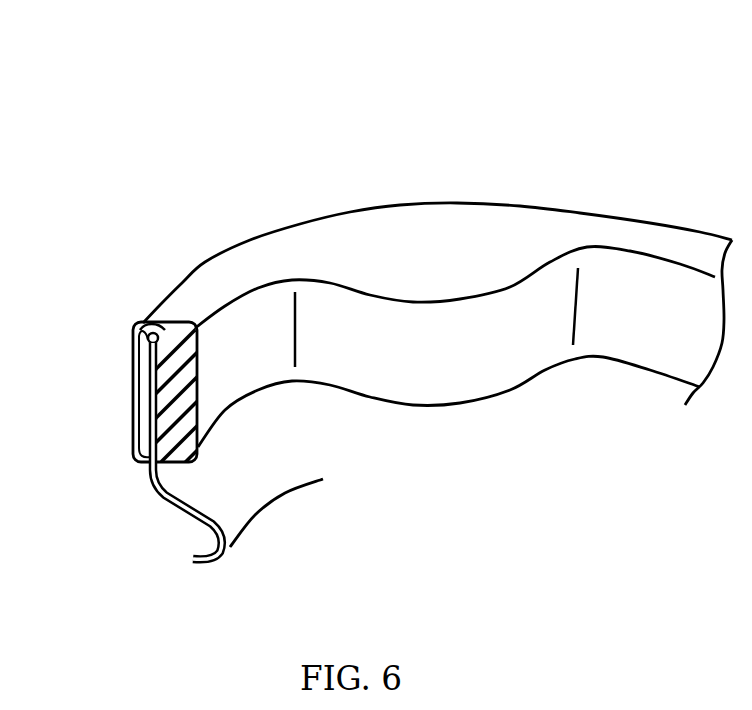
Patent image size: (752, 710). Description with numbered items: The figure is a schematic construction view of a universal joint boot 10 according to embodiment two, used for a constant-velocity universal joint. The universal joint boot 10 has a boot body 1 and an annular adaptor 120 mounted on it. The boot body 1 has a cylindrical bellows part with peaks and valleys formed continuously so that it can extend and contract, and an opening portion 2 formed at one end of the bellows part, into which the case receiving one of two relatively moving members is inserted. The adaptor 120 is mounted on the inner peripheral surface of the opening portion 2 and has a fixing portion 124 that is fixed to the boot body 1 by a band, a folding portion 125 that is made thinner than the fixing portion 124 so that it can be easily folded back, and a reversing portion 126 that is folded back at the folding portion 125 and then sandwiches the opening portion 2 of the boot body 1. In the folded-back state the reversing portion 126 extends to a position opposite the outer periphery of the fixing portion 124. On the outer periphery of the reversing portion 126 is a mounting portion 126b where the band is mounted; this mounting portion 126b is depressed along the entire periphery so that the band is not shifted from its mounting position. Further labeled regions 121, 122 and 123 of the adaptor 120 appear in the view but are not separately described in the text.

The universal joint boot 10 is at (413, 176).
The adaptor 120 is at (367, 230).
The upper surface 121 is at (602, 215).
The end surface 122 is at (623, 330).
The lower surface 123 is at (462, 382).
The fixing portion 124 is at (133, 443).
The folding portion 125 is at (153, 330).
The reversing portion 126 is at (135, 367).
The mounting portion 126b is at (133, 403).
The opening portion 2 is at (133, 337).
The boot body 1 is at (170, 505).